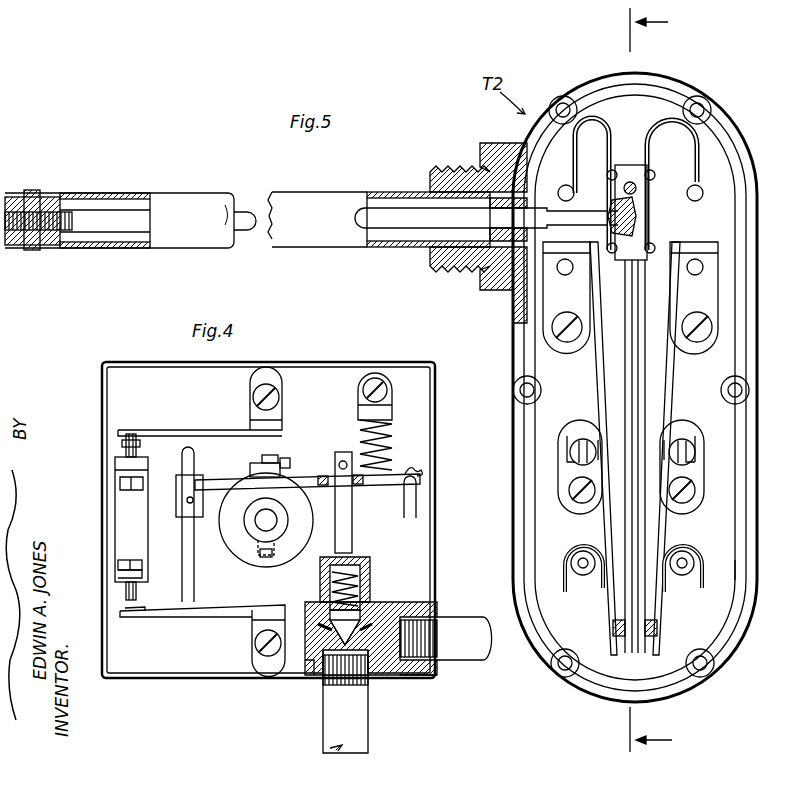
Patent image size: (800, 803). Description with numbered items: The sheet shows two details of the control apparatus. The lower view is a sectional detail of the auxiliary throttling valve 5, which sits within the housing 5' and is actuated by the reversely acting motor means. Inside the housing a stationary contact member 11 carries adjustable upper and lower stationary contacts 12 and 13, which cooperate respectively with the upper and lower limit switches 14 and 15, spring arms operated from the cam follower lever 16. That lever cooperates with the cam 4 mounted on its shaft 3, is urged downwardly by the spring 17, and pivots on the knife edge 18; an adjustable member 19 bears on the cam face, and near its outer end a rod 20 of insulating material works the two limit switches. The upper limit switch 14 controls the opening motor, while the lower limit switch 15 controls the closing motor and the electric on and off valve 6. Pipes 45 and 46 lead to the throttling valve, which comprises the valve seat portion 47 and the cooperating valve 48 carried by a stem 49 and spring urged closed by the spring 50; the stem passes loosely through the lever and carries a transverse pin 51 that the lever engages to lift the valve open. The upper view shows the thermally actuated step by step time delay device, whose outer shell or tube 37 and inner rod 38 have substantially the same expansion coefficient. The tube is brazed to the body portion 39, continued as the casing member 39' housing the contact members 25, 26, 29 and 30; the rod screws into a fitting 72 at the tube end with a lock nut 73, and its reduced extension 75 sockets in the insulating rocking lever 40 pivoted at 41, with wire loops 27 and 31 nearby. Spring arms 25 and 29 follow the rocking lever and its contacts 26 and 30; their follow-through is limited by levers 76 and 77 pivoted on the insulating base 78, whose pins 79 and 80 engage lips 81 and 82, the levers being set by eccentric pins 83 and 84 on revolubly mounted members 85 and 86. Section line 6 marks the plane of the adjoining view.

In FIG. 4, the shaft 3 is at (268, 518).
In FIG. 4, the cam 4 is at (237, 550).
In FIG. 4, the auxiliary throttling valve 5 is at (420, 702).
In FIG. 4, the housing 5' is at (287, 520).
In FIG. 5, the on and off valve 6 is at (639, 380).
In FIG. 4, the stationary contact member 11 is at (168, 512).
In FIG. 4, the upper stationary contact 12 is at (112, 446).
In FIG. 4, the lower stationary contact 13 is at (136, 596).
In FIG. 4, the upper limit switch 14 is at (236, 418).
In FIG. 4, the lower limit switch 15 is at (233, 618).
In FIG. 4, the cam follower lever 16 is at (382, 484).
In FIG. 4, the spring 17 is at (396, 452).
In FIG. 4, the knife edge 18 is at (410, 518).
In FIG. 4, the adjustable member 19 is at (256, 458).
In FIG. 4, the rod 20 is at (179, 548).
In FIG. 5, the spring contact arm 25 is at (667, 387).
In FIG. 5, the contact member 26 is at (648, 361).
In FIG. 5, the wire loop 27 is at (698, 196).
In FIG. 5, the spring contact arm 29 is at (591, 385).
In FIG. 5, the contact member 30 is at (622, 357).
In FIG. 5, the wire loop 31 is at (558, 194).
In FIG. 5, the outer shell 37 is at (180, 192).
In FIG. 5, the inner rod 38 is at (402, 227).
In FIG. 5, the body portion 39 is at (478, 238).
In FIG. 5, the casing member 39' is at (652, 387).
In FIG. 5, the rocking lever 40 is at (631, 156).
In FIG. 5, the pivot 41 is at (638, 190).
In FIG. 4, the pipe 45 is at (323, 722).
In FIG. 4, the pipe 46 is at (456, 660).
In FIG. 4, the valve seat portion 47 is at (398, 602).
In FIG. 4, the valve 48 is at (308, 662).
In FIG. 4, the stem 49 is at (352, 530).
In FIG. 4, the spring 50 is at (365, 578).
In FIG. 4, the pin 51 is at (343, 458).
In FIG. 5, the fitting 72 is at (36, 194).
In FIG. 5, the lock nut 73 is at (12, 197).
In FIG. 5, the reduced extension 75 is at (578, 223).
In FIG. 5, the lever 76 is at (686, 518).
In FIG. 5, the lever 77 is at (574, 528).
In FIG. 5, the insulating base portion 78 is at (730, 611).
In FIG. 5, the pin 79 is at (682, 575).
In FIG. 5, the pin 80 is at (583, 575).
In FIG. 5, the lip 81 is at (711, 572).
In FIG. 5, the lip 82 is at (559, 586).
In FIG. 5, the eccentric pin 83 is at (690, 446).
In FIG. 5, the eccentric pin 84 is at (571, 470).
In FIG. 5, the revolubly mounted member 85 is at (680, 428).
In FIG. 5, the revolubly mounted member 86 is at (580, 426).